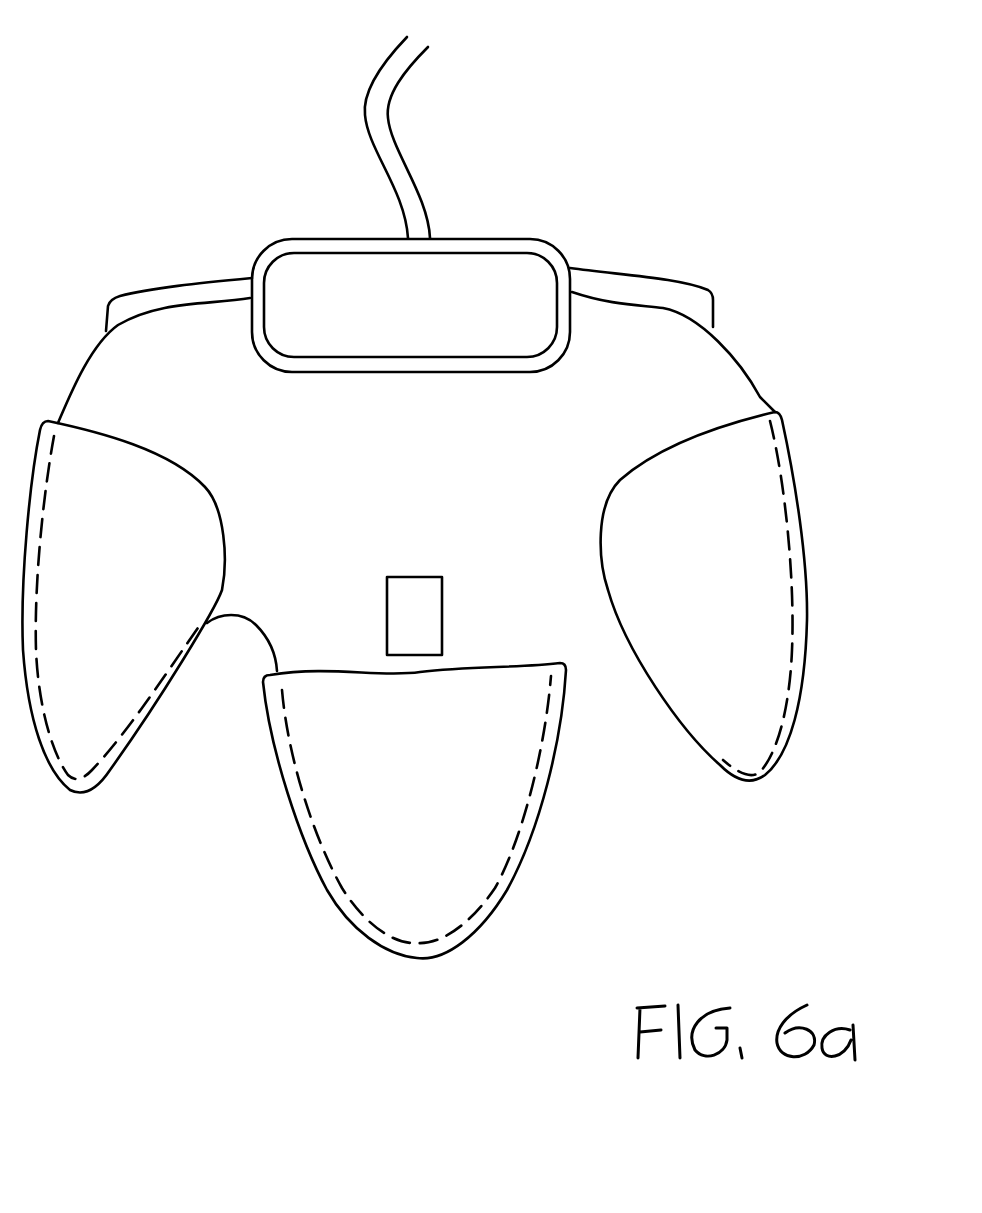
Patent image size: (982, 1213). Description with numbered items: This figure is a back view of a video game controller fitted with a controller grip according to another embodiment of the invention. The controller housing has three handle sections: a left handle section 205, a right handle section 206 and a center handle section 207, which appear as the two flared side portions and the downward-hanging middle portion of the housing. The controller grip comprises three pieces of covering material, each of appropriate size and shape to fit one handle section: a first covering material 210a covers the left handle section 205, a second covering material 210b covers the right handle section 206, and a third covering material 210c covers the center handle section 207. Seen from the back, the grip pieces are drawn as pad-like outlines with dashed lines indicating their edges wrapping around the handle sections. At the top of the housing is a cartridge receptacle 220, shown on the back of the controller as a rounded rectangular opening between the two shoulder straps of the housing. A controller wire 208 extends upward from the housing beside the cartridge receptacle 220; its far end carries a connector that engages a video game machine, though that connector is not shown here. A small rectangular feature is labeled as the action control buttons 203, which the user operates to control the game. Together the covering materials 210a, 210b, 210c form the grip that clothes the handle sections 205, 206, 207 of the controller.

The action control buttons 203 is at (442, 620).
The left handle section 205 is at (737, 767).
The right handle section 206 is at (93, 773).
The center handle section 207 is at (377, 927).
The controller wire 208 is at (380, 85).
The cartridge receptacle 220 is at (513, 240).
The first covering material 210a is at (712, 455).
The second covering material 210b is at (105, 708).
The third covering material 210c is at (482, 822).